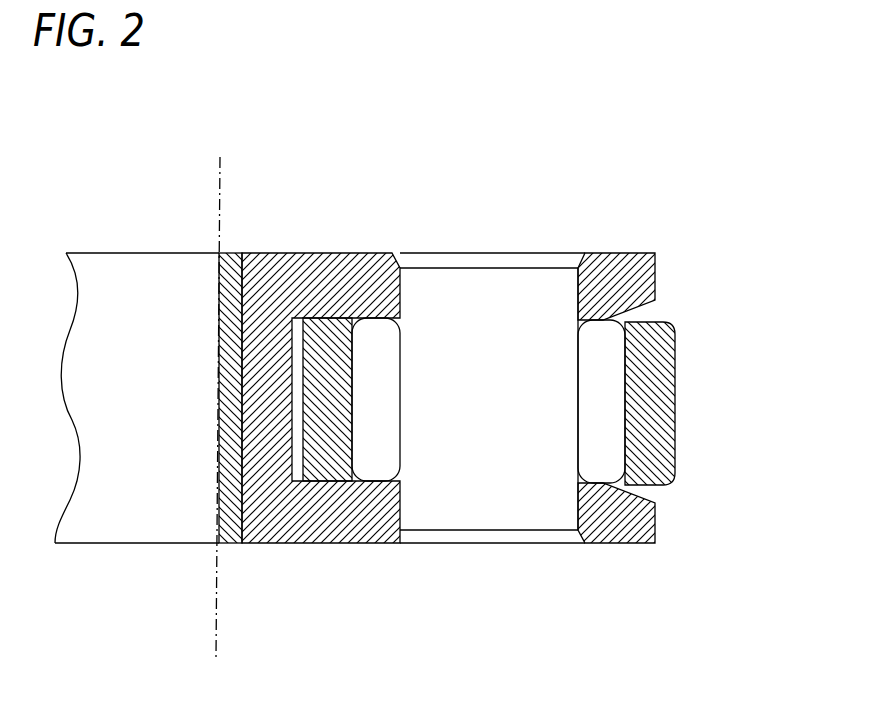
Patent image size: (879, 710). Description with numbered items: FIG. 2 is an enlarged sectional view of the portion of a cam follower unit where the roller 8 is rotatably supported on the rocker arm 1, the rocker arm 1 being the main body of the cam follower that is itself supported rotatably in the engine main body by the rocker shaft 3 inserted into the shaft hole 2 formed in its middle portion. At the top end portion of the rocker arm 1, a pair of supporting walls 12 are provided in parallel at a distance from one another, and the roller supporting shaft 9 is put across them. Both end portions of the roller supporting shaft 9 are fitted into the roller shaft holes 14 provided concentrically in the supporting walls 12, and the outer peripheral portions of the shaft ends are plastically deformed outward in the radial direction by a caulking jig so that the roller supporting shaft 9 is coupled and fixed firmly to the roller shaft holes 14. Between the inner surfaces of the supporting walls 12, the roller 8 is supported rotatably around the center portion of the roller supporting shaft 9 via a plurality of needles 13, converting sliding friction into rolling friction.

The rocker arm 1 is at (122, 272).
The shaft hole 2 is at (216, 472).
The rocker shaft 3 is at (202, 156).
The roller 8 is at (650, 383).
The roller supporting shaft 9 is at (469, 300).
The supporting wall 12 is at (322, 283).
The needle 13 is at (375, 443).
The roller shaft hole 14 is at (578, 295).